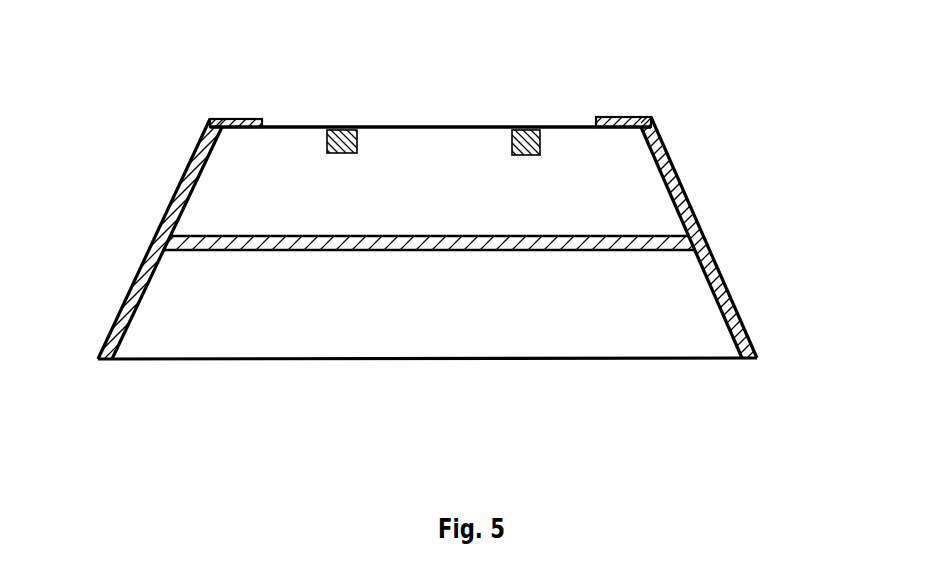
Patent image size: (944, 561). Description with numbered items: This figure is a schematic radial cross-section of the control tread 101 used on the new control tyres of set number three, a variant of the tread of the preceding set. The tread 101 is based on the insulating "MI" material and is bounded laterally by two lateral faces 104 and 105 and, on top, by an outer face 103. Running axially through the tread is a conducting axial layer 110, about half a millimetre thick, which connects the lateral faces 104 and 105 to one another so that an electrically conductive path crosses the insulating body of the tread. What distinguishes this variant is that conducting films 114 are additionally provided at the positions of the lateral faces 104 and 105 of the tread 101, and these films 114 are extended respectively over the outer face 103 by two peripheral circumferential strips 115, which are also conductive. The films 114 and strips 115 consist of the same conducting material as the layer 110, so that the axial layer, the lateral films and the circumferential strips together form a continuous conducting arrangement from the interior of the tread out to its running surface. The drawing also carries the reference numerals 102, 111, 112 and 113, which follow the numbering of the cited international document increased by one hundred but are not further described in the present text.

The tread 101 is at (385, 376).
The bottom plate 102 is at (543, 360).
The outer face 103 is at (425, 127).
The lateral face 104 is at (674, 163).
The lateral face 105 is at (179, 176).
The conducting axial layer 110 is at (422, 237).
The lower chamber 111 is at (405, 322).
The upper chamber 112 is at (320, 194).
The inner wall surface 113 is at (610, 193).
The conducting film 114 is at (737, 310).
The peripheral circumferential strip 115 is at (237, 119).